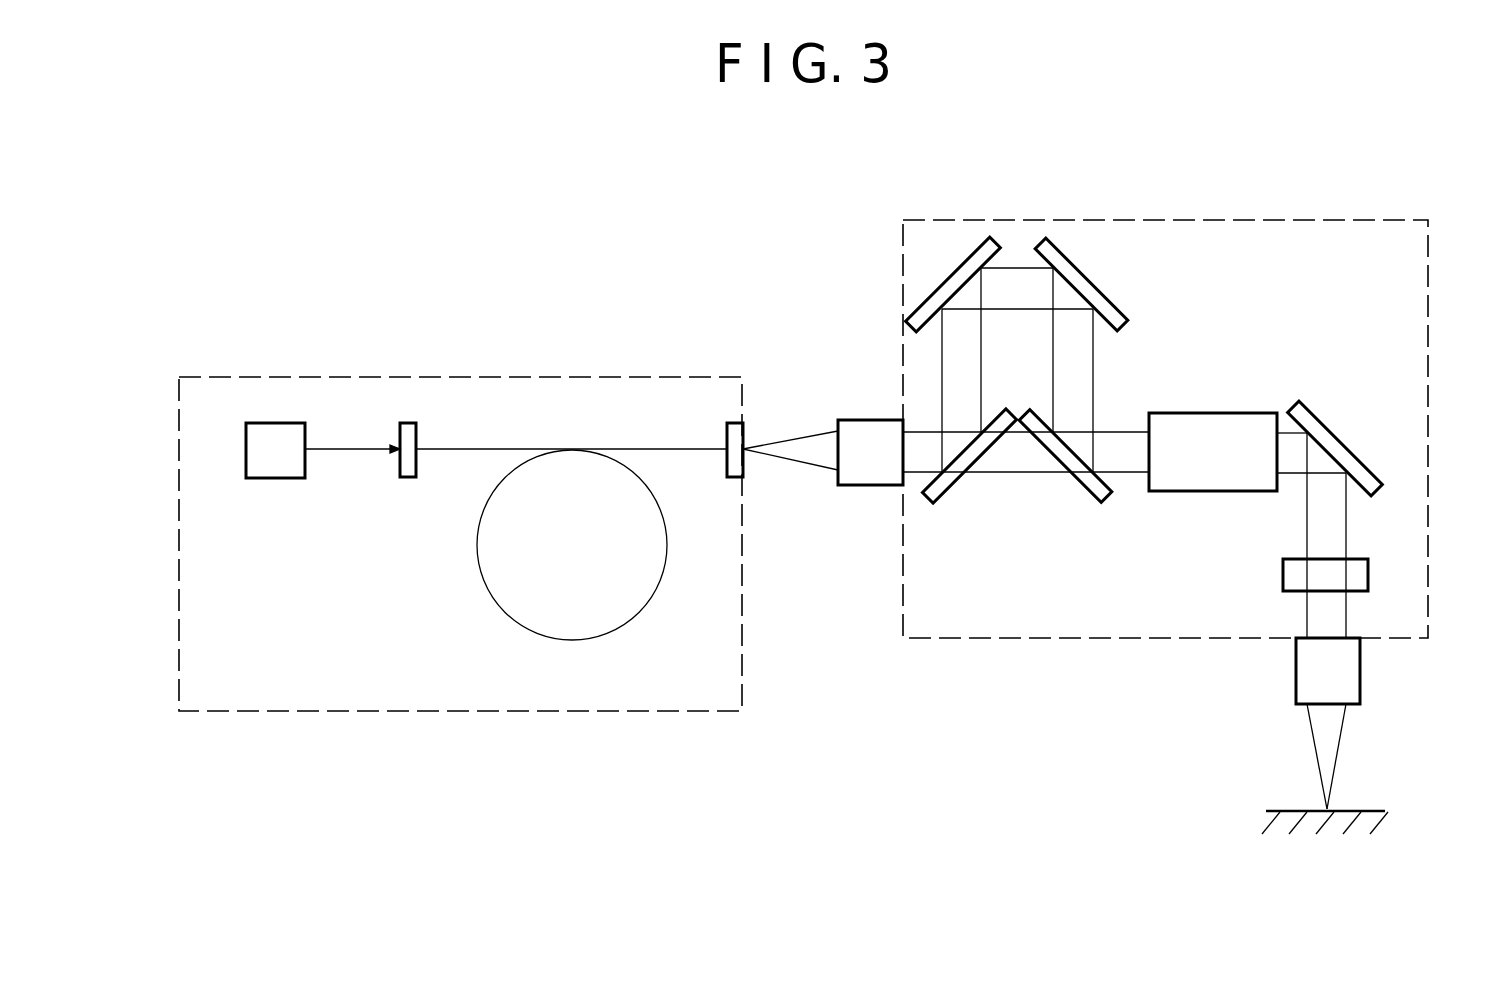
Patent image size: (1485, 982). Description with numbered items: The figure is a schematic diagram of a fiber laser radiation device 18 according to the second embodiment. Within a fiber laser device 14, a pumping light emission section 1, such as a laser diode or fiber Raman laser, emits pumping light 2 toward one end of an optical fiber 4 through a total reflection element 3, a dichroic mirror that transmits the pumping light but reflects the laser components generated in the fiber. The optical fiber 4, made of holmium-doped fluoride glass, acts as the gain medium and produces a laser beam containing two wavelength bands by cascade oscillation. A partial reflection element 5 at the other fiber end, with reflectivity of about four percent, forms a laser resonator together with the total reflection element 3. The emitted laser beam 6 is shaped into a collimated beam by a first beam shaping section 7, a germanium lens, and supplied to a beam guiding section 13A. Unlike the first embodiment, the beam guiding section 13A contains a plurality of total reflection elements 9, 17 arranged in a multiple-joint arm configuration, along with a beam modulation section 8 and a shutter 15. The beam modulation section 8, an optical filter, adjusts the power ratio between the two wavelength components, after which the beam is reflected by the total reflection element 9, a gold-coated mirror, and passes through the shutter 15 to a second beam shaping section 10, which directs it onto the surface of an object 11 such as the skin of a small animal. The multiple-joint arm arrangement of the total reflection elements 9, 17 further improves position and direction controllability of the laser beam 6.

The pumping light emission section 1 is at (280, 423).
The pumping light 2 is at (351, 455).
The total reflection element 3 is at (416, 423).
The optical fiber 4 is at (506, 617).
The partial reflection element 5 is at (727, 424).
The laser beam 6 is at (790, 468).
The first beam shaping section 7 is at (873, 419).
The beam modulation section 8 is at (1212, 412).
The total reflection element 9 is at (1340, 430).
The second beam shaping section 10 is at (1360, 670).
The object 11 is at (1366, 810).
The beam guiding section 13A is at (1010, 640).
The fiber laser device 14 is at (292, 712).
The shutter 15 is at (1283, 578).
The total reflection elements 17 is at (947, 277).
The fiber laser radiation device 18 is at (1222, 190).